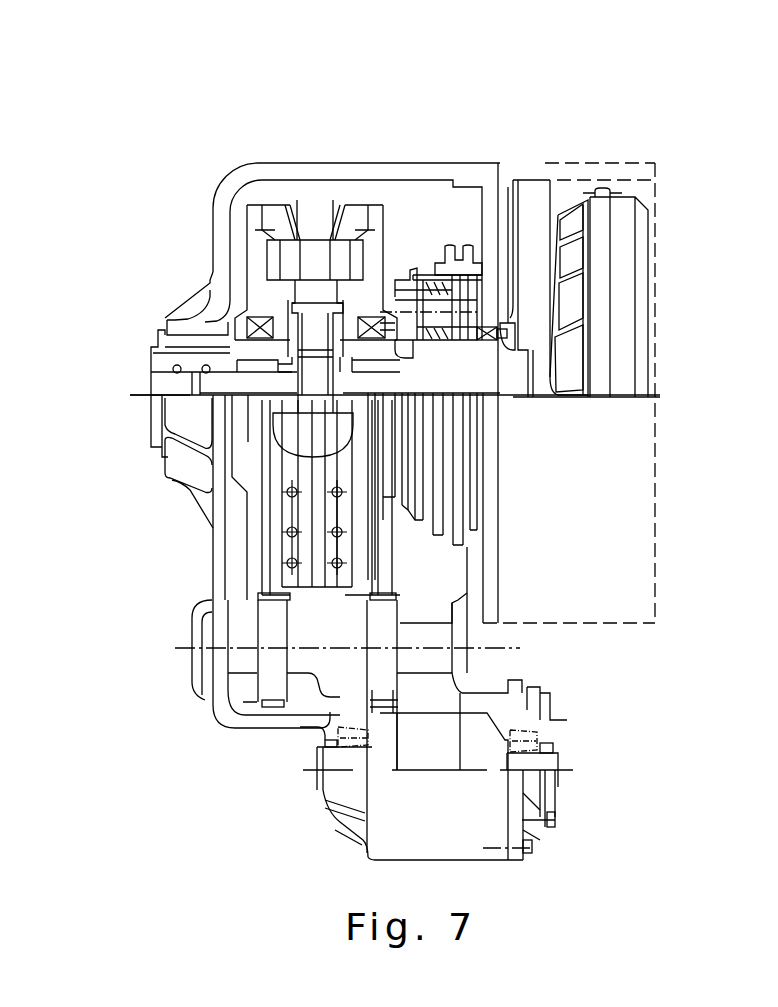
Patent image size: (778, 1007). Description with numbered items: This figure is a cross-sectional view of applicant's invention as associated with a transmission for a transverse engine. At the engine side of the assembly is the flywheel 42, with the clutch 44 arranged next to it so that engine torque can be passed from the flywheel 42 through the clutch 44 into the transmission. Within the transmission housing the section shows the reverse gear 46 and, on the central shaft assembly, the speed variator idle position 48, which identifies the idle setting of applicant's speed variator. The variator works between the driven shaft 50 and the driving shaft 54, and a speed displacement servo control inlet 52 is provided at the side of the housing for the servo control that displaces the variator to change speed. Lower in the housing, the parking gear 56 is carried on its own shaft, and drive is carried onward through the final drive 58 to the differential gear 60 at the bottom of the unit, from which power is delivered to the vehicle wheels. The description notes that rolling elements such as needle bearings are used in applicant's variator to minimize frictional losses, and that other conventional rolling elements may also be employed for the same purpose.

The flywheel 42 is at (608, 180).
The clutch 44 is at (557, 210).
The reverse gear 46 is at (445, 240).
The speed variator idle position 48 is at (323, 200).
The driven shaft 50 is at (222, 370).
The speed displacement servo control inlet 52 is at (128, 390).
The driving shaft 54 is at (180, 648).
The parking gear 56 is at (340, 663).
The final drive 58 is at (380, 672).
The differential gear 60 is at (492, 712).